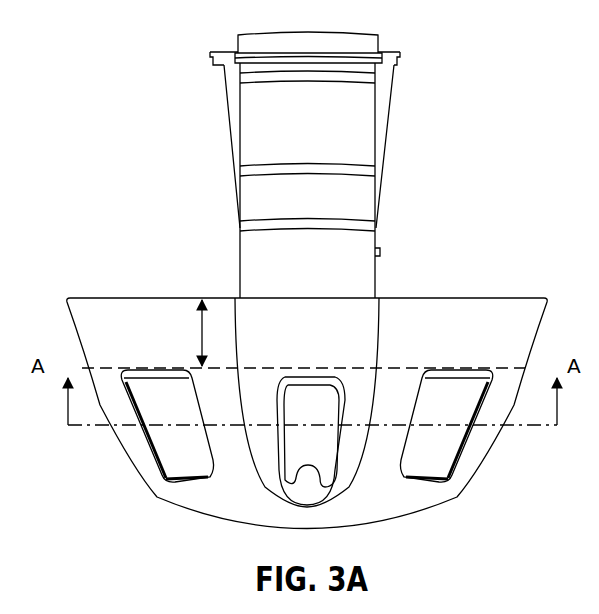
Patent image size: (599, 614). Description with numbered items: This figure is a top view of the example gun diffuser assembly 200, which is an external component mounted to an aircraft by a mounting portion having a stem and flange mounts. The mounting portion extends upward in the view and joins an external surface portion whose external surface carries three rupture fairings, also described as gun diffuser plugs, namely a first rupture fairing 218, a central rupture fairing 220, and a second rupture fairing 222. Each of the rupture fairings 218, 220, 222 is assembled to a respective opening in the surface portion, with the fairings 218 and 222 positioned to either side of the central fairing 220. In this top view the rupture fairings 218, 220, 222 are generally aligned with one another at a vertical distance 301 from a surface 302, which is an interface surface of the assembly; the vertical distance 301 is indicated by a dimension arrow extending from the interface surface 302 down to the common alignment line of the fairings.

The gun diffuser assembly 200 is at (490, 68).
The rupture fairing 218 is at (170, 470).
The rupture fairing 220 is at (292, 460).
The rupture fairing 222 is at (447, 470).
The vertical distance 301 is at (200, 330).
The surface 302 is at (460, 298).